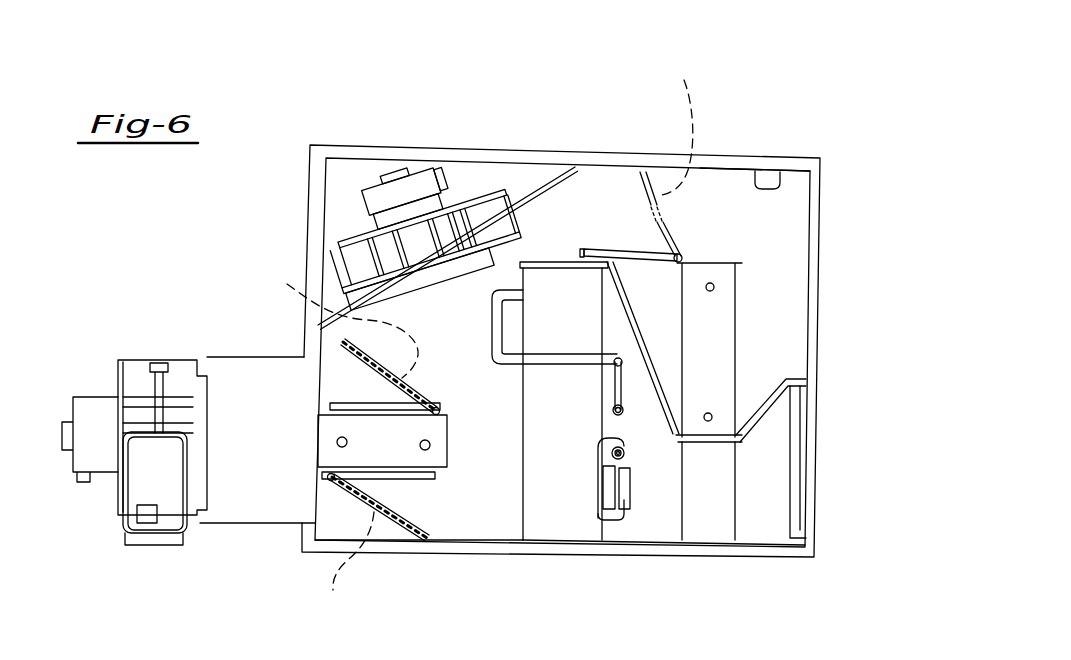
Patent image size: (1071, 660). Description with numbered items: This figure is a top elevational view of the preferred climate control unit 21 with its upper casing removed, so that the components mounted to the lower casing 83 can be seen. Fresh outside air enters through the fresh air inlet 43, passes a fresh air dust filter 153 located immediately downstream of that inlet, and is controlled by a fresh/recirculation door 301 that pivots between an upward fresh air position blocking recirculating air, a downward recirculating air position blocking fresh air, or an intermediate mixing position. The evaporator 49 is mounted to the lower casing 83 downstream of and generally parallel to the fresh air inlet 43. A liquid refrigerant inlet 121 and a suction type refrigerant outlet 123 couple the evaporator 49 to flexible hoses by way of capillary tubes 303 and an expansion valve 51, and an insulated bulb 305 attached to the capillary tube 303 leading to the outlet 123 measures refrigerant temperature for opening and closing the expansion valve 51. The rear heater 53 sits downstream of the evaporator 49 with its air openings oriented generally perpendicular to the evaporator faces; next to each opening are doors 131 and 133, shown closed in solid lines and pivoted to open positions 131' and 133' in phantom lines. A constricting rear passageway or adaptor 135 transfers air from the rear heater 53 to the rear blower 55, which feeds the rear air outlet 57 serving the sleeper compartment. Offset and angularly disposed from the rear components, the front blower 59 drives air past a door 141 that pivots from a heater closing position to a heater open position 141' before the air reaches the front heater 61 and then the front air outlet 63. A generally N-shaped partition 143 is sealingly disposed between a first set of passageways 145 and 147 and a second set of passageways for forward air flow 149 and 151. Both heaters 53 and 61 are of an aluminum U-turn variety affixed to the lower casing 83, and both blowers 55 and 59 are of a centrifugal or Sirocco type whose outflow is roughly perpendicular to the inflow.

The climate control unit 21 is at (343, 87).
The fresh air inlet 43 is at (842, 442).
The evaporator 49 is at (582, 457).
The expansion valve 51 is at (620, 350).
The rear heater 53 is at (432, 437).
The rear blower 55 is at (137, 368).
The rear air outlet 57 is at (147, 477).
The front blower 59 is at (482, 220).
The front heater 61 is at (713, 357).
The front air outlet 63 is at (848, 258).
The lower casing 83 is at (760, 165).
The liquid refrigerant inlet 121 is at (493, 330).
The refrigerant outlet 123 is at (676, 434).
The door 131 is at (397, 535).
The open position of door 131 131' is at (363, 555).
The door 133 is at (322, 362).
The open position of door 133 133' is at (324, 320).
The rear passageway or adaptor 135 is at (270, 414).
The door 141 is at (631, 272).
The heater open position of door 141 141' is at (662, 127).
The partition 143 is at (760, 418).
The passageway 145 is at (662, 519).
The passageway 147 is at (472, 508).
The passageway for forward air flow 149 is at (548, 208).
The passageway for forward air flow 151 is at (720, 172).
The fresh air dust filter 153 is at (795, 507).
The fresh/recirculation door 301 is at (714, 521).
The capillary tube 303 is at (622, 410).
The insulated bulb 305 is at (627, 492).